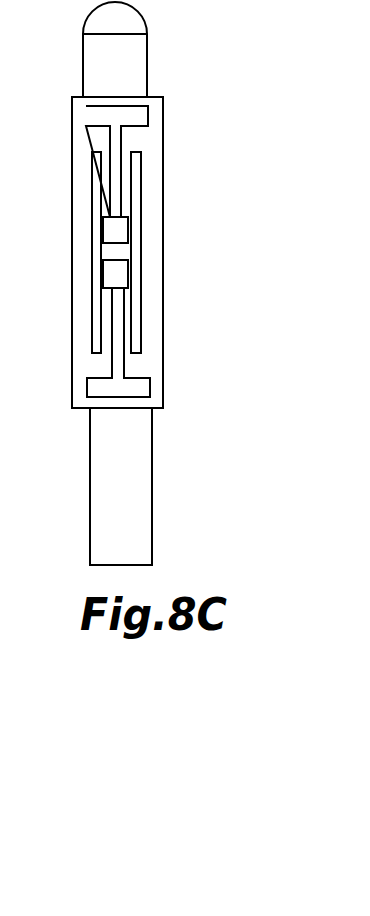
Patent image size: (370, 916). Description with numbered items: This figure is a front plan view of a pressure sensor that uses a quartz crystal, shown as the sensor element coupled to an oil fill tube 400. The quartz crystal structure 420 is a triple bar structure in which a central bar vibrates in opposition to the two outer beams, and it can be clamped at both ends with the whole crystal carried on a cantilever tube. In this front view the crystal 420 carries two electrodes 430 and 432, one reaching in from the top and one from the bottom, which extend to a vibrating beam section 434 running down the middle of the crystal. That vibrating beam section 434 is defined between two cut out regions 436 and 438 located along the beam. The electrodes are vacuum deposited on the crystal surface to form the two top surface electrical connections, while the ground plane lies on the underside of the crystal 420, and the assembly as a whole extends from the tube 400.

The oil fill tube 400 is at (152, 470).
The quartz crystal structure 420 is at (163, 120).
The electrode 430 is at (93, 106).
The electrode 432 is at (95, 378).
The vibrating beam section 434 is at (98, 203).
The cut out region 436 is at (101, 247).
The cut out region 438 is at (145, 250).